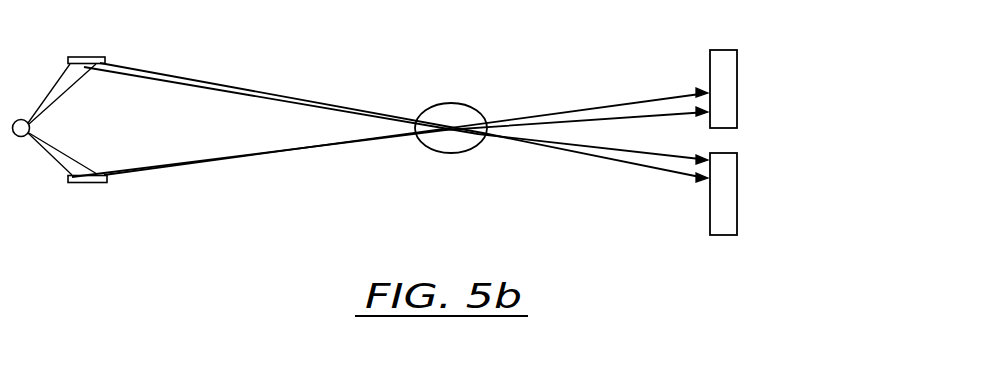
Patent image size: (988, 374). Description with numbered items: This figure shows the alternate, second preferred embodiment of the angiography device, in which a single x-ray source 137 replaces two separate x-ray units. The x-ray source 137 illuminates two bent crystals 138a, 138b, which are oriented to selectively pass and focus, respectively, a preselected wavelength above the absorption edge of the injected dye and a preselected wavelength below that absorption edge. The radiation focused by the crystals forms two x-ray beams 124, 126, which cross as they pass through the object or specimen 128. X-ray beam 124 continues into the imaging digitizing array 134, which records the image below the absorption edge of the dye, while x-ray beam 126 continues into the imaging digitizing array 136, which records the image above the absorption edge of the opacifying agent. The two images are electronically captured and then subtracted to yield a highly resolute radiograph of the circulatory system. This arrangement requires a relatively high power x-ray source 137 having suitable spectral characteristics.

The x-ray source 137 is at (31, 130).
The bent crystal 138a is at (68, 57).
The bent crystal 138b is at (84, 183).
The x-ray beam 124 is at (336, 100).
The x-ray beam 126 is at (347, 151).
The object or specimen 128 is at (488, 105).
The imaging digitizing array 136 is at (756, 138).
The imaging digitizing array 134 is at (759, 235).